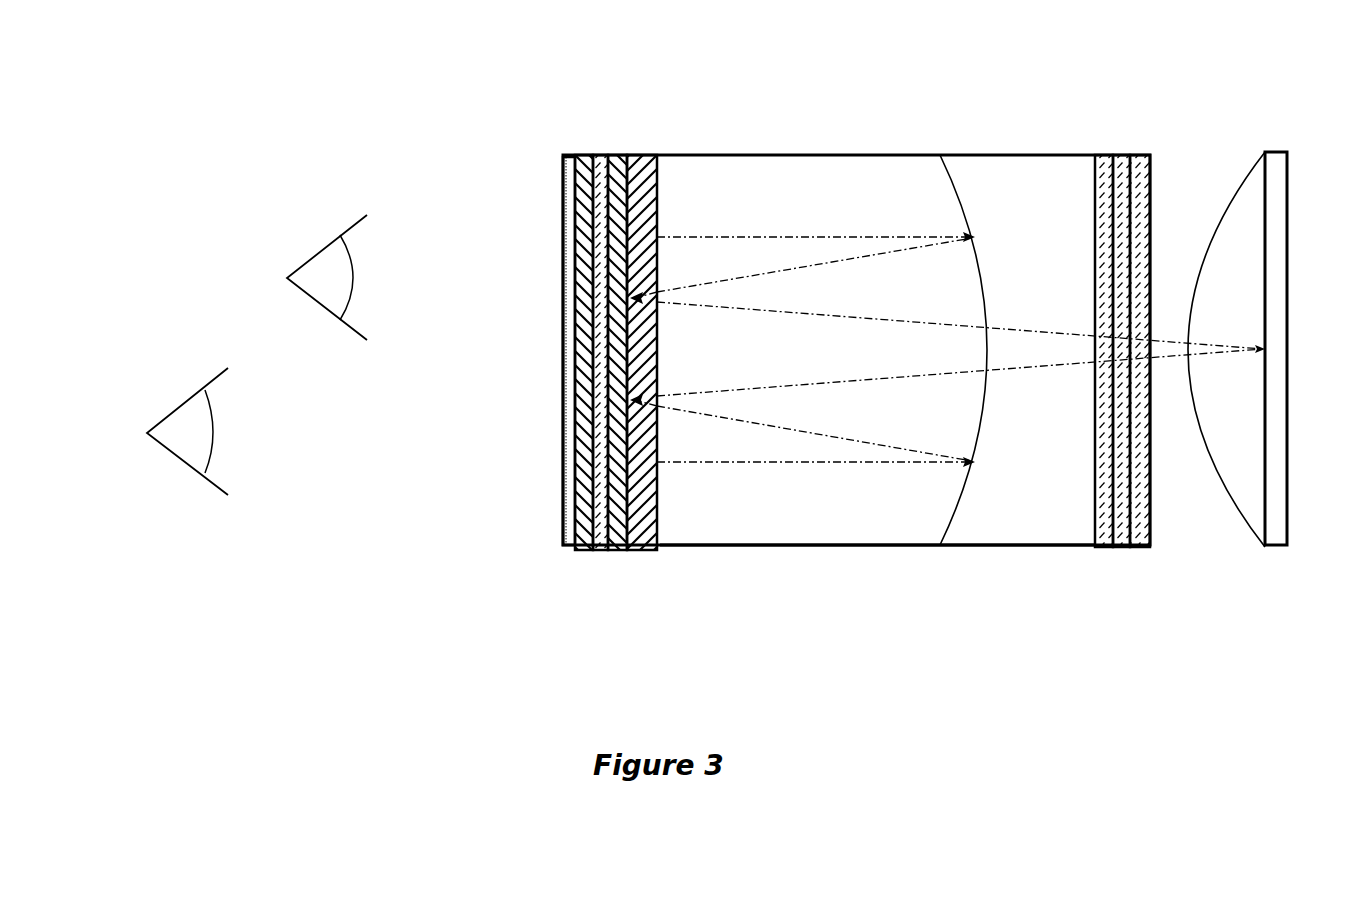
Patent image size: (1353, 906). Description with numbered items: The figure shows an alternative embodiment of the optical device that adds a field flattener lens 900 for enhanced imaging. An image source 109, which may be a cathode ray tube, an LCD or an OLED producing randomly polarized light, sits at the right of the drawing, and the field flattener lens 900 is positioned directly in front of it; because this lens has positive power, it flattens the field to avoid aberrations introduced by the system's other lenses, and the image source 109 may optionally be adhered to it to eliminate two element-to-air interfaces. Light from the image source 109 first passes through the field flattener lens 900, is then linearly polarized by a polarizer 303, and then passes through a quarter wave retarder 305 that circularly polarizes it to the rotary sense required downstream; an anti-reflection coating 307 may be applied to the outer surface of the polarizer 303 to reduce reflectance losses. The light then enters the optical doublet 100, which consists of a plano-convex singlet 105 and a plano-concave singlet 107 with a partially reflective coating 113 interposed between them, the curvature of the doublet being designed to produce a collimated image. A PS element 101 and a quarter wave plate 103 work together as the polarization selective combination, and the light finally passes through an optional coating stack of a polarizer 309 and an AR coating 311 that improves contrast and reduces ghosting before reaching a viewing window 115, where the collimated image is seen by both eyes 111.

The optical doublet 100 is at (1114, 81).
The PS element 101 is at (616, 155).
The quarter wave plate 103 is at (641, 155).
The plano-convex singlet 105 is at (833, 155).
The plano-concave singlet 107 is at (1008, 545).
The image source 109 is at (1262, 152).
The eyes 111 is at (342, 235).
The partially reflective coating 113 is at (975, 485).
The viewing window 115 is at (568, 153).
The polarizer 303 is at (1122, 548).
The quarter wave retarder 305 is at (1103, 548).
The anti-reflection coating 307 is at (1140, 548).
The polarizer 309 is at (600, 550).
The AR coating 311 is at (575, 549).
The field flattener lens 900 is at (1240, 190).